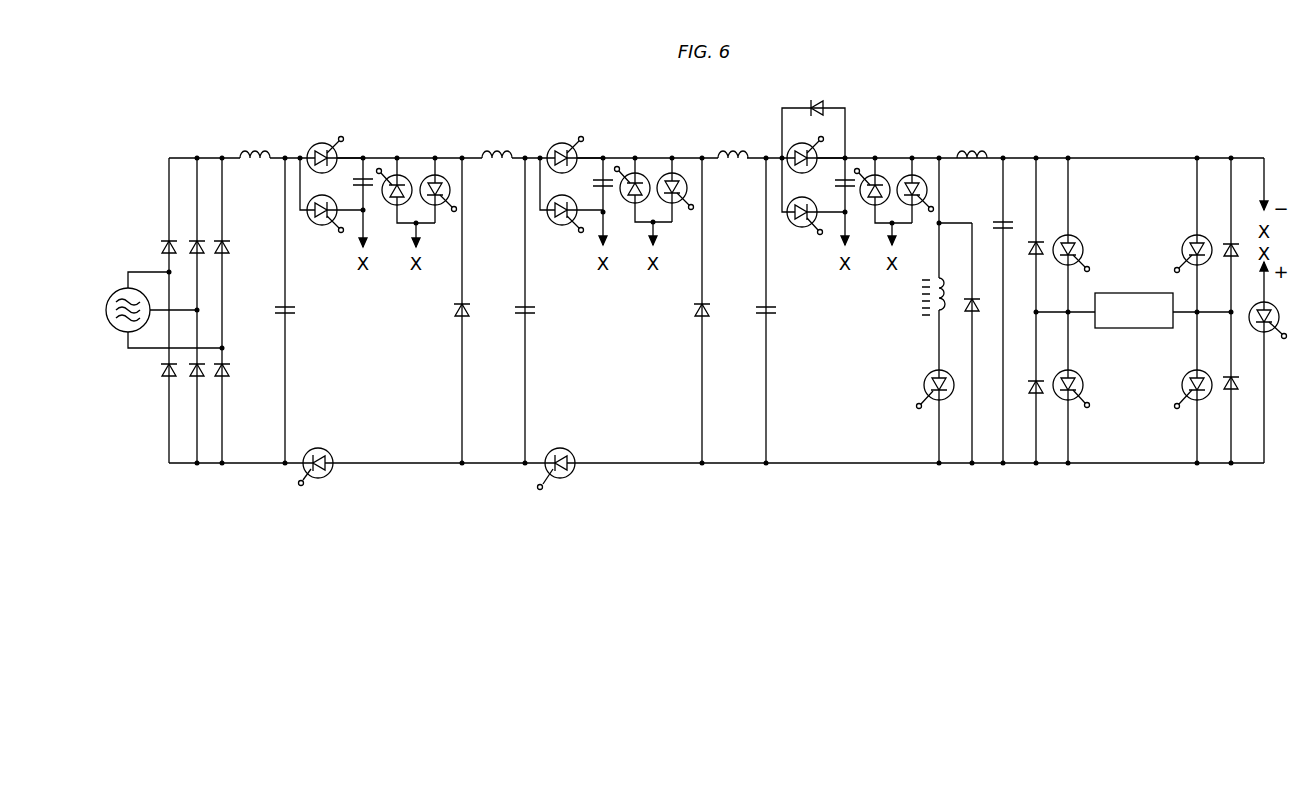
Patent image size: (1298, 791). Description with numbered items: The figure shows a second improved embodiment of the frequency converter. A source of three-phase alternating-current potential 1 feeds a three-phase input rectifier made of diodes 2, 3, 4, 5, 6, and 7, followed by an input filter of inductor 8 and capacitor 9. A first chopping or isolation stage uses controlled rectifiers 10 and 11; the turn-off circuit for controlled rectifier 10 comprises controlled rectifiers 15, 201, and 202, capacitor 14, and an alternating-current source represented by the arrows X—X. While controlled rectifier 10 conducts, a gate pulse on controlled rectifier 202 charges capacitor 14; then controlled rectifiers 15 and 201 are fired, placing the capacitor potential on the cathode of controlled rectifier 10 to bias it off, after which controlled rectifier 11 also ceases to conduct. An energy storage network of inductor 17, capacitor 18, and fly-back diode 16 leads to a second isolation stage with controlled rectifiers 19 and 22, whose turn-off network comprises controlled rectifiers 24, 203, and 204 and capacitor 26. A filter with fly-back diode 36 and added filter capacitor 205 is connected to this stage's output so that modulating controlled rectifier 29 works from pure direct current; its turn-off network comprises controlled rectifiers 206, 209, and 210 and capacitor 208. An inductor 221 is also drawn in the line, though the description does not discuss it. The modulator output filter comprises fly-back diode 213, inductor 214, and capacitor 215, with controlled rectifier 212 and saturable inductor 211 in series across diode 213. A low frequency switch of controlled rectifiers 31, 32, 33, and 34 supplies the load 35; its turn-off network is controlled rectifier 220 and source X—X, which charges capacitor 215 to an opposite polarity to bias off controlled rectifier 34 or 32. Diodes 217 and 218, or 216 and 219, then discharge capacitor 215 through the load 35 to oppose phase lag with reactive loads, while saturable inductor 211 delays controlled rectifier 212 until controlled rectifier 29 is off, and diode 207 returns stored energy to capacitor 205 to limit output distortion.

The source of three-phase alternating-current potential 1 is at (116, 290).
The diode 2 is at (174, 255).
The diode 3 is at (174, 378).
The diode 4 is at (202, 255).
The diode 5 is at (202, 378).
The diode 6 is at (227, 255).
The diode 7 is at (227, 378).
The inductor 8 is at (259, 154).
The capacitor 9 is at (276, 310).
The controlled rectifier 10 is at (317, 147).
The controlled rectifier 11 is at (328, 453).
The capacitor 14 is at (352, 182).
The controlled rectifier 15 is at (319, 228).
The fly-back diode 16 is at (452, 310).
The inductor 17 is at (504, 152).
The capacitor 18 is at (535, 310).
The controlled rectifier 19 is at (559, 148).
The controlled rectifier 22 is at (564, 456).
The controlled rectifier 24 is at (556, 228).
The capacitor 26 is at (593, 184).
The controlled rectifier 29 is at (800, 148).
The controlled rectifier 31 is at (1184, 244).
The controlled rectifier 32 is at (1185, 387).
The controlled rectifier 33 is at (1082, 245).
The controlled rectifier 34 is at (1083, 387).
The load 35 is at (1146, 334).
The fly-back diode 36 is at (692, 310).
The controlled rectifier 201 is at (386, 211).
The controlled rectifier 202 is at (450, 170).
The controlled rectifier 203 is at (624, 211).
The controlled rectifier 204 is at (686, 168).
The filter capacitor 205 is at (776, 310).
The controlled rectifier 206 is at (800, 229).
The diode 207 is at (821, 106).
The capacitor 208 is at (835, 184).
The controlled rectifier 209 is at (865, 211).
The controlled rectifier 210 is at (924, 170).
The saturable inductor 211 is at (952, 299).
The controlled rectifier 212 is at (924, 386).
The fly-back diode 213 is at (980, 299).
The inductor 214 is at (977, 154).
The capacitor 215 is at (994, 225).
The diode 216 is at (1029, 252).
The diode 217 is at (1027, 389).
The diode 218 is at (1226, 256).
The diode 219 is at (1240, 388).
The controlled rectifier 220 is at (1274, 313).
The inductor 221 is at (738, 154).